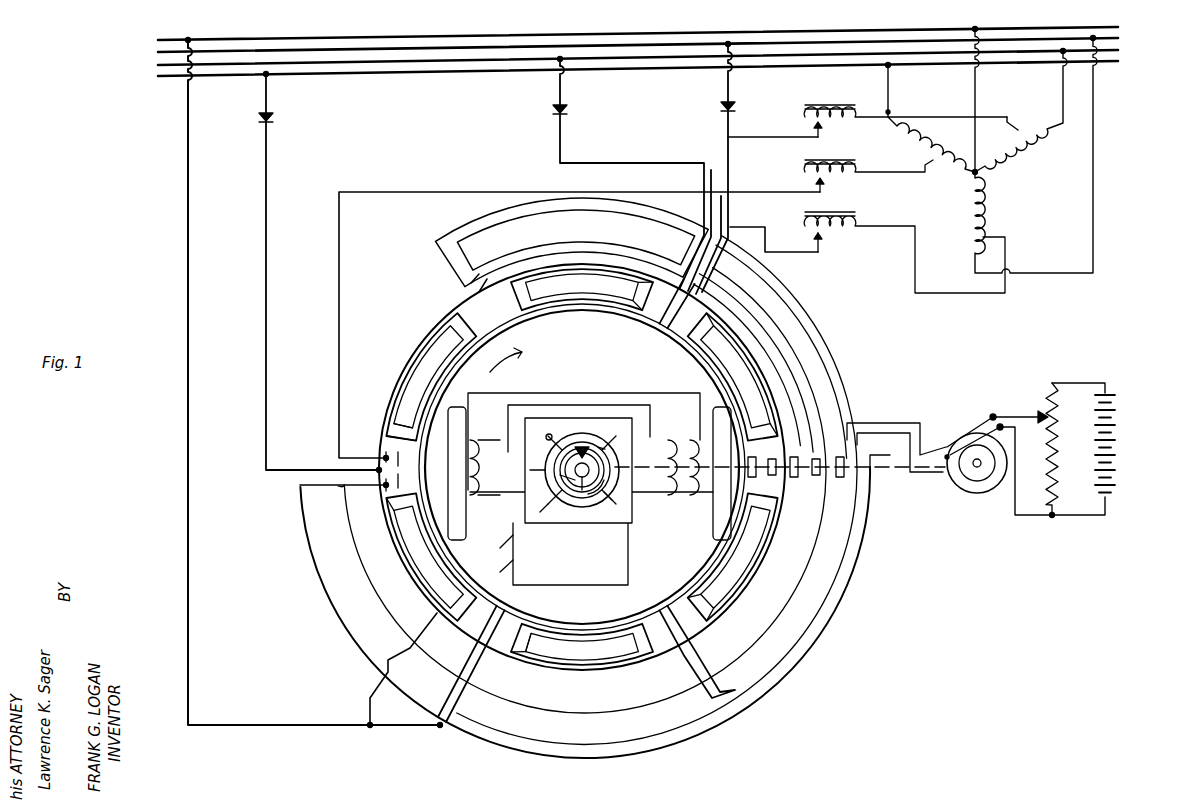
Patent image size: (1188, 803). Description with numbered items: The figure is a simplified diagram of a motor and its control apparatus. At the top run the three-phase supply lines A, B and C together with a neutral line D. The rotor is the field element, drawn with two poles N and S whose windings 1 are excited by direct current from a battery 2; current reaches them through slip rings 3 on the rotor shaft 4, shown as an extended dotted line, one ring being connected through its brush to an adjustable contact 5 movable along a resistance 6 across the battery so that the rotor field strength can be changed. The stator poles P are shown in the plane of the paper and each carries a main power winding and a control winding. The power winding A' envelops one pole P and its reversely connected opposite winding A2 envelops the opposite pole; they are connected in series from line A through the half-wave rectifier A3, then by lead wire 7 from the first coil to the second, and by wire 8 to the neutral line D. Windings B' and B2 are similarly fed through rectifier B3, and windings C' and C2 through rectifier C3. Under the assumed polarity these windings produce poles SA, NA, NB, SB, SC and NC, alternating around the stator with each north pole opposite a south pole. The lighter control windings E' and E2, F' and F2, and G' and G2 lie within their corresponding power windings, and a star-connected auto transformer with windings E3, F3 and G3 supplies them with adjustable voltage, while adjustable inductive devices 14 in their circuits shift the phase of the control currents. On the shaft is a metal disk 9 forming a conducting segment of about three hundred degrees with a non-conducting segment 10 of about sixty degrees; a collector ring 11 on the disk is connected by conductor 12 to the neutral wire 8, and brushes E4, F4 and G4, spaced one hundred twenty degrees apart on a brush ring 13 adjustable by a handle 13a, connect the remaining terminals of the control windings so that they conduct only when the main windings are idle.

The neutral line D is at (158, 40).
The three-phase supply line C is at (616, 54).
The three-phase supply line B is at (616, 71).
The three-phase supply line A is at (622, 84).
The half-wave rectifier A3 is at (272, 117).
The half-wave rectifier B3 is at (572, 109).
The half-wave rectifier C3 is at (716, 108).
The adjustable inductive devices 14 is at (830, 99).
The auto transformer winding E3 is at (936, 137).
The auto transformer winding F3 is at (1014, 148).
The auto transformer winding G3 is at (967, 206).
The lead wire 7 is at (534, 253).
The poles P is at (444, 383).
The power winding B' is at (582, 306).
The power winding C' is at (712, 377).
The power winding A2 is at (700, 595).
The power winding B2 is at (590, 634).
The control winding G2 is at (428, 592).
The control winding E' is at (416, 375).
The wire 8 is at (852, 566).
The rotor shaft 4 is at (893, 470).
The south pole S is at (449, 473).
The north pole N is at (714, 506).
The field windings 1 is at (496, 498).
The brush ring 13 is at (566, 433).
The handle 13a is at (549, 434).
The non-conducting segment 10 is at (594, 426).
The brush F4 is at (592, 445).
The brush E4 is at (592, 498).
The brush G4 is at (530, 468).
The metal disk 9 is at (562, 492).
The collector ring 11 is at (580, 494).
The power winding C2 is at (530, 500).
The conductor 12 is at (512, 548).
The south pole SA is at (415, 378).
The power winding A' is at (384, 414).
The north pole NB is at (626, 306).
The control winding F' is at (633, 324).
The south pole SC is at (748, 362).
The control winding G' is at (816, 396).
The north pole NA is at (706, 566).
The control winding E2 is at (668, 602).
The south pole SB is at (542, 634).
The control winding F2 is at (604, 668).
The north pole NC is at (416, 548).
The slip rings 3 is at (972, 492).
The adjustable contact 5 is at (1040, 412).
The resistance 6 is at (1056, 488).
The battery 2 is at (1114, 405).